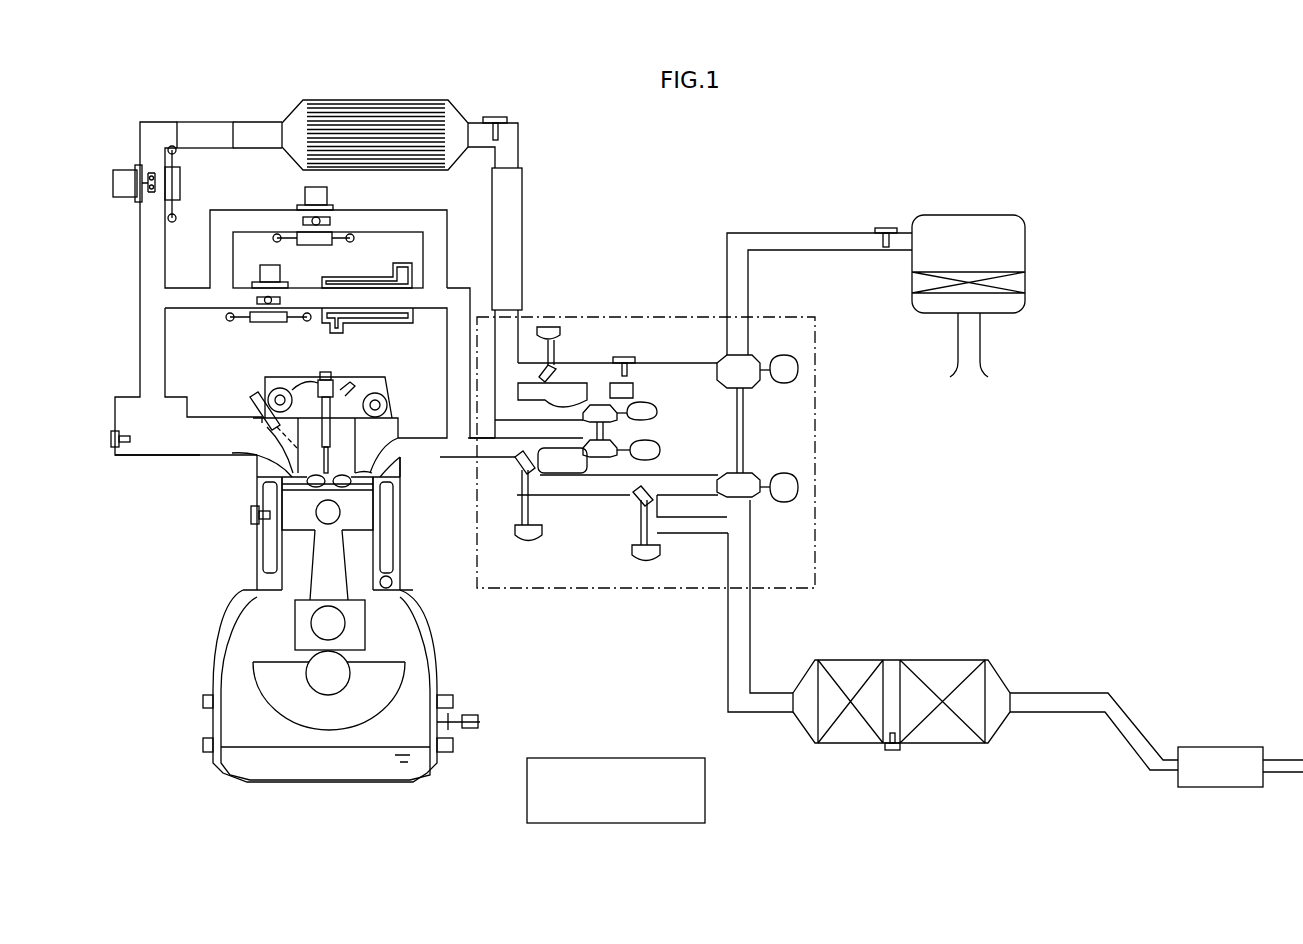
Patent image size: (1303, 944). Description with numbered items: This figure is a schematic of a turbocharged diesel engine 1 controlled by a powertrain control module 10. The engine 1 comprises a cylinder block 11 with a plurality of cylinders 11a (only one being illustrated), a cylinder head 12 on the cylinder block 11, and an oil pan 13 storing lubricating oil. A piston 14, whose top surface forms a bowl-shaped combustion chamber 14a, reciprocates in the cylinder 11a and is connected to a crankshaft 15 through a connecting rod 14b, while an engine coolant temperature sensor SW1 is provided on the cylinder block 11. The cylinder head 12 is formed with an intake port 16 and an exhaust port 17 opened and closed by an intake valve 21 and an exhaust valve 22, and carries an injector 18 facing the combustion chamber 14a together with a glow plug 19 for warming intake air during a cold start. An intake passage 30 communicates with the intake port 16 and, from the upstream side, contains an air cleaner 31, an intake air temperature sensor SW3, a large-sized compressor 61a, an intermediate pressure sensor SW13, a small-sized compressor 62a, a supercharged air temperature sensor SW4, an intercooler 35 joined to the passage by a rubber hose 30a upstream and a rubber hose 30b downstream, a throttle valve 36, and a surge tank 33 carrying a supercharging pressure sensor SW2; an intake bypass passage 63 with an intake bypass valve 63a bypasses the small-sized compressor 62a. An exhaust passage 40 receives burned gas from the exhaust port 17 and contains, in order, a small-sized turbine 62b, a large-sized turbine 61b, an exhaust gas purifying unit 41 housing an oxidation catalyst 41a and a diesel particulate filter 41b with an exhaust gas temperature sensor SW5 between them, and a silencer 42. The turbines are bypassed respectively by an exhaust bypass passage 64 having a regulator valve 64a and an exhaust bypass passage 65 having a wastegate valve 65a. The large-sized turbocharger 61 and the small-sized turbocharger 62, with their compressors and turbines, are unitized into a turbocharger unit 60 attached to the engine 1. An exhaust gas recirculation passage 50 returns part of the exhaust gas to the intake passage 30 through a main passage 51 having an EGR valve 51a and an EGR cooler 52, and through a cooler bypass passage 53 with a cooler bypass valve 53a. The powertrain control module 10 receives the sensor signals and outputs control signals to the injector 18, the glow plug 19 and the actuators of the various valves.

The engine 1 is at (152, 752).
The powertrain control module 10 is at (562, 825).
The cylinder block 11 is at (398, 532).
The cylinder 11a is at (393, 580).
The cylinder head 12 is at (405, 412).
The oil pan 13 is at (340, 782).
The piston 14 is at (285, 525).
The combustion chamber 14a is at (345, 490).
The connecting rod 14b is at (310, 583).
The crankshaft 15 is at (318, 700).
The intake port 16 is at (270, 445).
The exhaust port 17 is at (395, 440).
The injector 18 is at (325, 372).
The glow plug 19 is at (268, 392).
The intake valve 21 is at (302, 478).
The exhaust valve 22 is at (385, 464).
The intake passage 30 is at (143, 322).
The rubber hose 30a is at (522, 210).
The rubber hose 30b is at (200, 121).
The air cleaner 31 is at (985, 215).
The surge tank 33 is at (141, 458).
The intercooler 35 is at (375, 100).
The throttle valve 36 is at (135, 165).
The exhaust passage 40 is at (727, 640).
The exhaust gas purifying unit 41 is at (840, 603).
The oxidation catalyst 41a is at (862, 670).
The diesel particulate filter 41b is at (945, 670).
The silencer 42 is at (1235, 747).
The exhaust gas recirculation passage 50 is at (458, 296).
The main passage 51 is at (390, 320).
The EGR valve 51a is at (285, 298).
The EGR cooler 52 is at (360, 277).
The cooler bypass passage 53 is at (270, 208).
The cooler bypass valve 53a is at (330, 222).
The turbocharger unit 60 is at (820, 490).
The large-sized turbocharger 61 is at (886, 395).
The large-sized compressor 61a is at (755, 378).
The large-sized turbine 61b is at (762, 478).
The small-sized turbocharger 62 is at (645, 190).
The small-sized compressor 62a is at (612, 408).
The small-sized turbine 62b is at (642, 447).
The intake bypass passage 63 is at (595, 362).
The intake bypass valve 63a is at (566, 355).
The exhaust bypass passage 64 is at (557, 497).
The regulator valve 64a is at (520, 475).
The exhaust bypass passage 65 is at (680, 530).
The wastegate valve 65a is at (636, 508).
The engine coolant temperature sensor SW1 is at (250, 515).
The supercharging pressure sensor SW2 is at (111, 440).
The intake air temperature sensor SW3 is at (886, 228).
The supercharged air temperature sensor SW4 is at (495, 117).
The exhaust gas temperature sensor SW5 is at (893, 752).
The intermediate pressure sensor SW13 is at (623, 355).